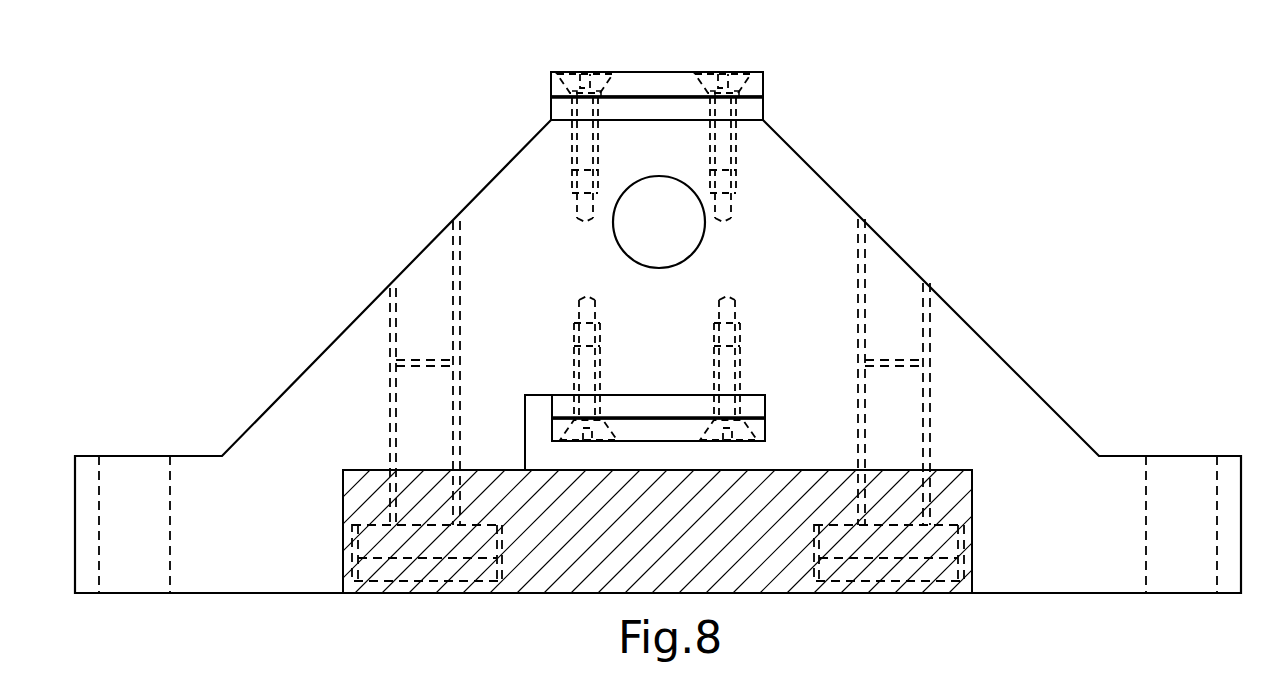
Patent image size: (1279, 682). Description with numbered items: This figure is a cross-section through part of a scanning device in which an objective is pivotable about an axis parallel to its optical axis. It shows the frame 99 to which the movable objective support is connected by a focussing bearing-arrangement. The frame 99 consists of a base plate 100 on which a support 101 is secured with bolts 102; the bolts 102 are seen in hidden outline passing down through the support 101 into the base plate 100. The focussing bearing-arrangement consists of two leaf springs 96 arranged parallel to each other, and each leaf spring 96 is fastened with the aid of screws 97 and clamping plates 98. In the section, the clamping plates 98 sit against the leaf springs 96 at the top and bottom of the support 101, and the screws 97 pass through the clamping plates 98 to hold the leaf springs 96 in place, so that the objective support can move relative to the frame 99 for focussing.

The leaf spring 96 is at (753, 93).
The screws 97 is at (602, 73).
The clamping plates 98 is at (670, 80).
The frame 99 is at (1014, 348).
The base plate 100 is at (207, 572).
The support 101 is at (488, 235).
The bolts 102 is at (416, 407).